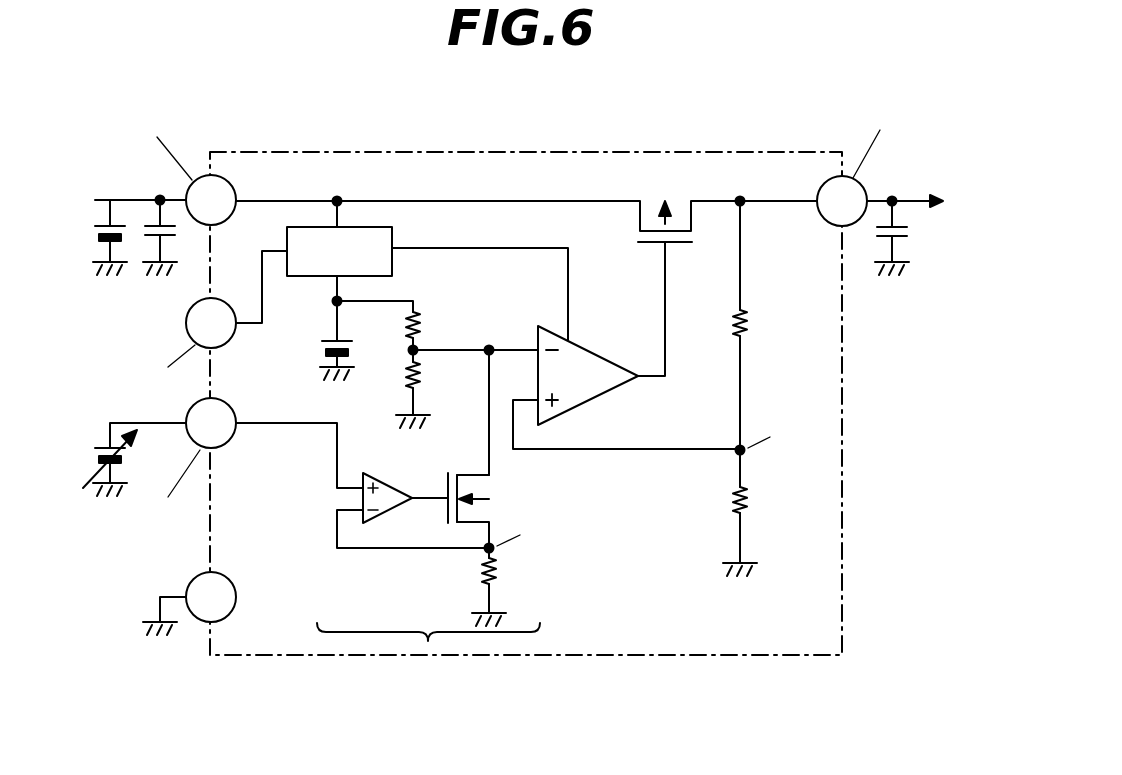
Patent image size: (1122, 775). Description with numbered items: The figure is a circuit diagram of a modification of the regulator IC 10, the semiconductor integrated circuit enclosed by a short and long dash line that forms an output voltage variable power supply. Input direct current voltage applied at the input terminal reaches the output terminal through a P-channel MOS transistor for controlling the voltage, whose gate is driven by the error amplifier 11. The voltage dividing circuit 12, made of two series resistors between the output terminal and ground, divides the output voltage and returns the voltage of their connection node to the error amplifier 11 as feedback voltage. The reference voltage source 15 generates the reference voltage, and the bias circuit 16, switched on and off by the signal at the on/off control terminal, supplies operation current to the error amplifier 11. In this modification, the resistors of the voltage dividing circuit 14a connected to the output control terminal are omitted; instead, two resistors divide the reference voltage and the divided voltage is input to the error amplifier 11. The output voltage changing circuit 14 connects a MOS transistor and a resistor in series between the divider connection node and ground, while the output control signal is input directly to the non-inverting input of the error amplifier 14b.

The regulator IC 10 is at (602, 152).
The error amplifier 11 is at (585, 346).
The voltage dividing circuit 12 is at (778, 540).
The output voltage changing circuit 14 is at (438, 508).
The voltage dividing circuit 14a is at (382, 380).
The error amplifier 14b is at (395, 483).
The reference voltage source 15 is at (310, 353).
The bias circuit 16 is at (393, 241).